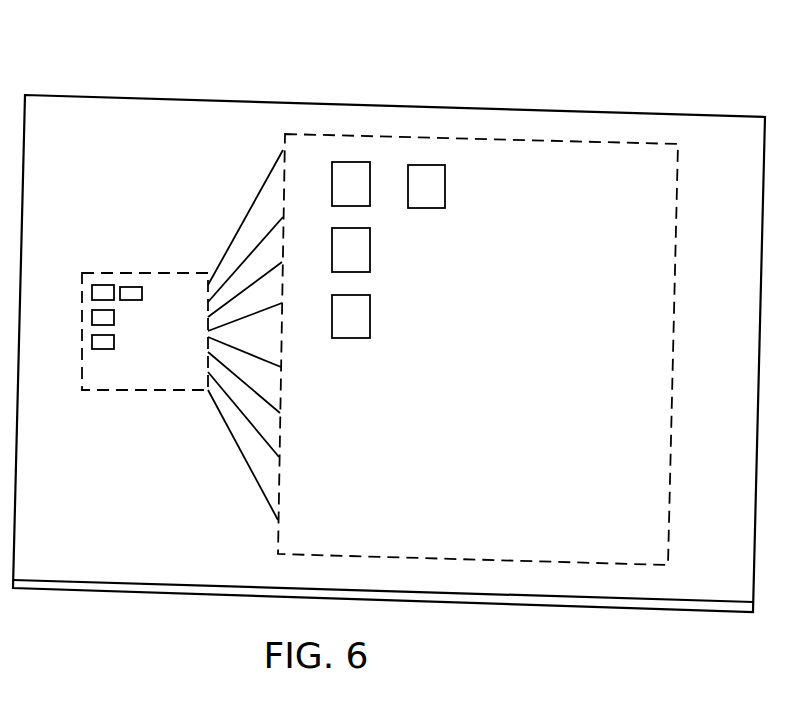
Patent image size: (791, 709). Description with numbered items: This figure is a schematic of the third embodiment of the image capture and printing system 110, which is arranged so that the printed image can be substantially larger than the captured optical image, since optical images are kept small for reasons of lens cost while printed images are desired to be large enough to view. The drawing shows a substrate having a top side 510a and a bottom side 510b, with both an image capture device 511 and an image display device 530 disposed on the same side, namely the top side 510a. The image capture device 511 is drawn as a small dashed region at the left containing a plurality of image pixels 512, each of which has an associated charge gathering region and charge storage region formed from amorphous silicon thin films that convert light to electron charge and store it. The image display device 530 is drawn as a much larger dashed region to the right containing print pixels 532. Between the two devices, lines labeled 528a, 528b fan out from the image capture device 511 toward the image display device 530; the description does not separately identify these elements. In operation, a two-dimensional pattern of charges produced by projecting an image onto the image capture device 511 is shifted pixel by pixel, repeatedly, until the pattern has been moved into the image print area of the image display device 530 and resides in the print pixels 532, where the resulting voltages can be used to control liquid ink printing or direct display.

The image capture and printing system 110 is at (389, 342).
The top side 510a is at (672, 590).
The bottom side 510b is at (588, 608).
The image capture device 511 is at (115, 391).
The image pixels 512 is at (102, 290).
The first conductive trace 528a is at (260, 196).
The second conductive trace 528b is at (258, 240).
The image display device 530 is at (279, 545).
The print pixels 532 is at (445, 186).